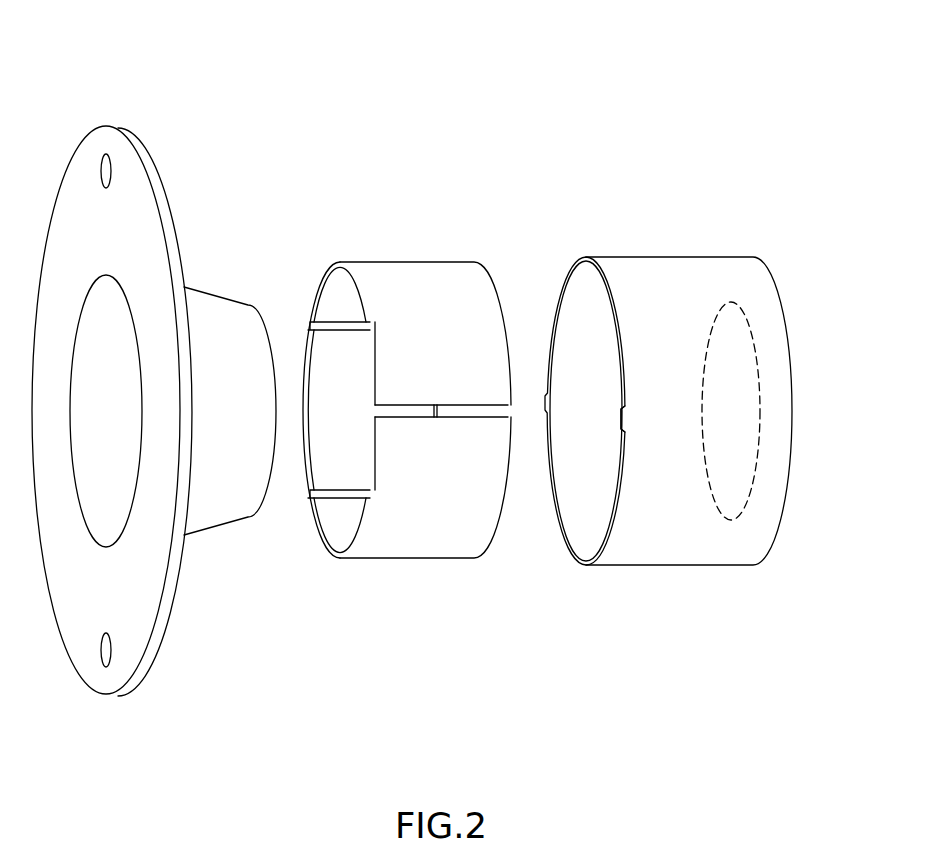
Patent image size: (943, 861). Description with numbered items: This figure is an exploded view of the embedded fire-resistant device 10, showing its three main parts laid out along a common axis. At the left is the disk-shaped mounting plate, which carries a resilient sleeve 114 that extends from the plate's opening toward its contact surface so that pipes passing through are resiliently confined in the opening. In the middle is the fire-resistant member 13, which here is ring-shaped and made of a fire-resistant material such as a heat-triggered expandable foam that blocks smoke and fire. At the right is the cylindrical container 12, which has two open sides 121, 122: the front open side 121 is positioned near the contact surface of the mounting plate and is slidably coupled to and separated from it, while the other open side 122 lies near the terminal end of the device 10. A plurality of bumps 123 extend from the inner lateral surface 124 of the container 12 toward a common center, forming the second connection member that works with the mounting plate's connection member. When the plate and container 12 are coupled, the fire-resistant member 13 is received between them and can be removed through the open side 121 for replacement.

The embedded fire-resistant device 10 is at (155, 351).
The resilient sleeve 114 is at (212, 323).
The fire-resistant member 13 is at (432, 278).
The container 12 is at (663, 417).
The inner lateral surface 124 is at (575, 297).
The bumps 123 is at (625, 420).
The open side 121 is at (550, 567).
The open side 122 is at (787, 567).